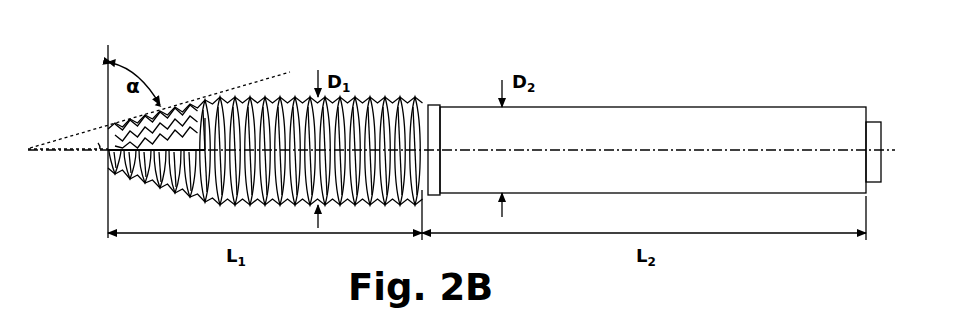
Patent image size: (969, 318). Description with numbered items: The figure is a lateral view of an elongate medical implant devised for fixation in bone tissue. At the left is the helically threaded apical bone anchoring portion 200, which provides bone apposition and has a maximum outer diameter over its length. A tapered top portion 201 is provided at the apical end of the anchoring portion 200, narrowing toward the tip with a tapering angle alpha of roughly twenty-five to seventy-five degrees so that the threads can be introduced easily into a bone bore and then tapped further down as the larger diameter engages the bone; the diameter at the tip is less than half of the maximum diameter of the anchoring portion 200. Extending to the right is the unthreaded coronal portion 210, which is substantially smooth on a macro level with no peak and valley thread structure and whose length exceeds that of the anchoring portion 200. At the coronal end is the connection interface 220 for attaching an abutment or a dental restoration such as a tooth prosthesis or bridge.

The helically threaded apical bone anchoring portion 200 is at (288, 95).
The tapered top portion 201 is at (124, 194).
The unthreaded coronal portion 210 is at (660, 104).
The connection interface 220 is at (875, 110).